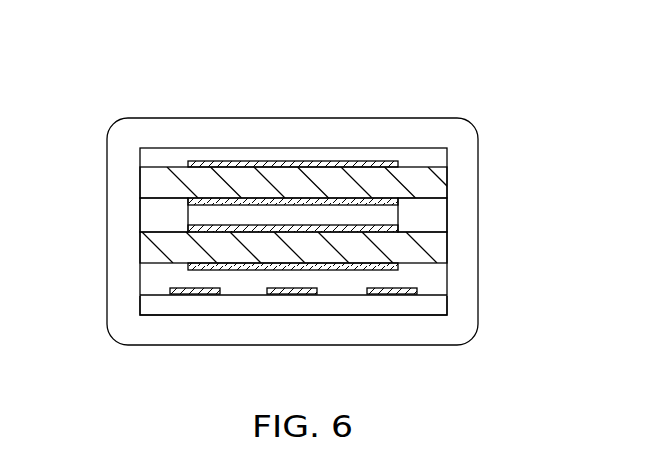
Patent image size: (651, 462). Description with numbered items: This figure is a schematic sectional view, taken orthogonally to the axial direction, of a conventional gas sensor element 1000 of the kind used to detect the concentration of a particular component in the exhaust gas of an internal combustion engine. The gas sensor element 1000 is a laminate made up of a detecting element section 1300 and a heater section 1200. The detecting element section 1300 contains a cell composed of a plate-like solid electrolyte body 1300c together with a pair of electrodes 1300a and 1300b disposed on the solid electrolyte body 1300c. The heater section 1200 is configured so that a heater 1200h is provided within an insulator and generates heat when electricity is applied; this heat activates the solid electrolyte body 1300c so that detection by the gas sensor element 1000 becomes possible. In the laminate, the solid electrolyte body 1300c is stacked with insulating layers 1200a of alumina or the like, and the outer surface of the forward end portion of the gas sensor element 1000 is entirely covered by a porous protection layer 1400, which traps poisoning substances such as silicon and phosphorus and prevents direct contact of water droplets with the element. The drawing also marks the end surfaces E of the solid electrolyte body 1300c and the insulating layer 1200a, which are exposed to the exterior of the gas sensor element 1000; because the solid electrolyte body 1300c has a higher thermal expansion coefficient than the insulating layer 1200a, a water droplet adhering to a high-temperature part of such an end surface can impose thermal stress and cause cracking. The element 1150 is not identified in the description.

The gas sensor element 1000 is at (414, 83).
The porous protection layer 1400 is at (196, 130).
The detecting element section 1300 is at (295, 267).
The electrode 1300a is at (238, 270).
The electrode 1300b is at (215, 226).
The solid electrolyte body 1300c is at (172, 250).
The insulating spacer 1150 is at (168, 216).
The heater section 1200 is at (298, 325).
The insulating layer 1200a is at (153, 282).
The heater 1200h is at (397, 295).
The end surfaces E is at (134, 308).